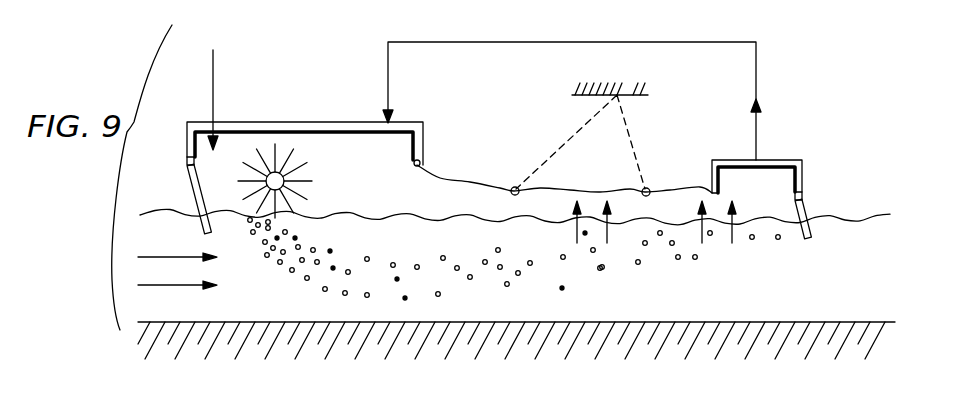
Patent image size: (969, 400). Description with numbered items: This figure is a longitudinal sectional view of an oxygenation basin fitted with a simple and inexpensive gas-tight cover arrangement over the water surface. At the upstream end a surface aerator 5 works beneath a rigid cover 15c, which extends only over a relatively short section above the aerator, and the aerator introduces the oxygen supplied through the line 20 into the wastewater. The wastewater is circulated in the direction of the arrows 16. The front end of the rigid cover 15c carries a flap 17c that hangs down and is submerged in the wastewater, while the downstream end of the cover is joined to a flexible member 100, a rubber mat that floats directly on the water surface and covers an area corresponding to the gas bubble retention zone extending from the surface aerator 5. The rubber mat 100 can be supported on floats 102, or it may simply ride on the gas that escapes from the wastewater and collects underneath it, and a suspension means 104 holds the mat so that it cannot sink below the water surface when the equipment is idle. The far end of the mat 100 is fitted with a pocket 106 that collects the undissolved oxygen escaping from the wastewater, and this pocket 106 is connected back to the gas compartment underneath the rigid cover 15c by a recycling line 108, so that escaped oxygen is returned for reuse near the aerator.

The surface aerator 5 is at (313, 179).
The rigid cover 15c is at (292, 122).
The arrows 16 is at (152, 257).
The flap 17c is at (194, 185).
The line 20 is at (215, 68).
The flexible member 100 is at (457, 176).
The floats 102 is at (515, 187).
The suspension means 104 is at (628, 83).
The pocket 106 is at (802, 182).
The recycling line 108 is at (533, 42).